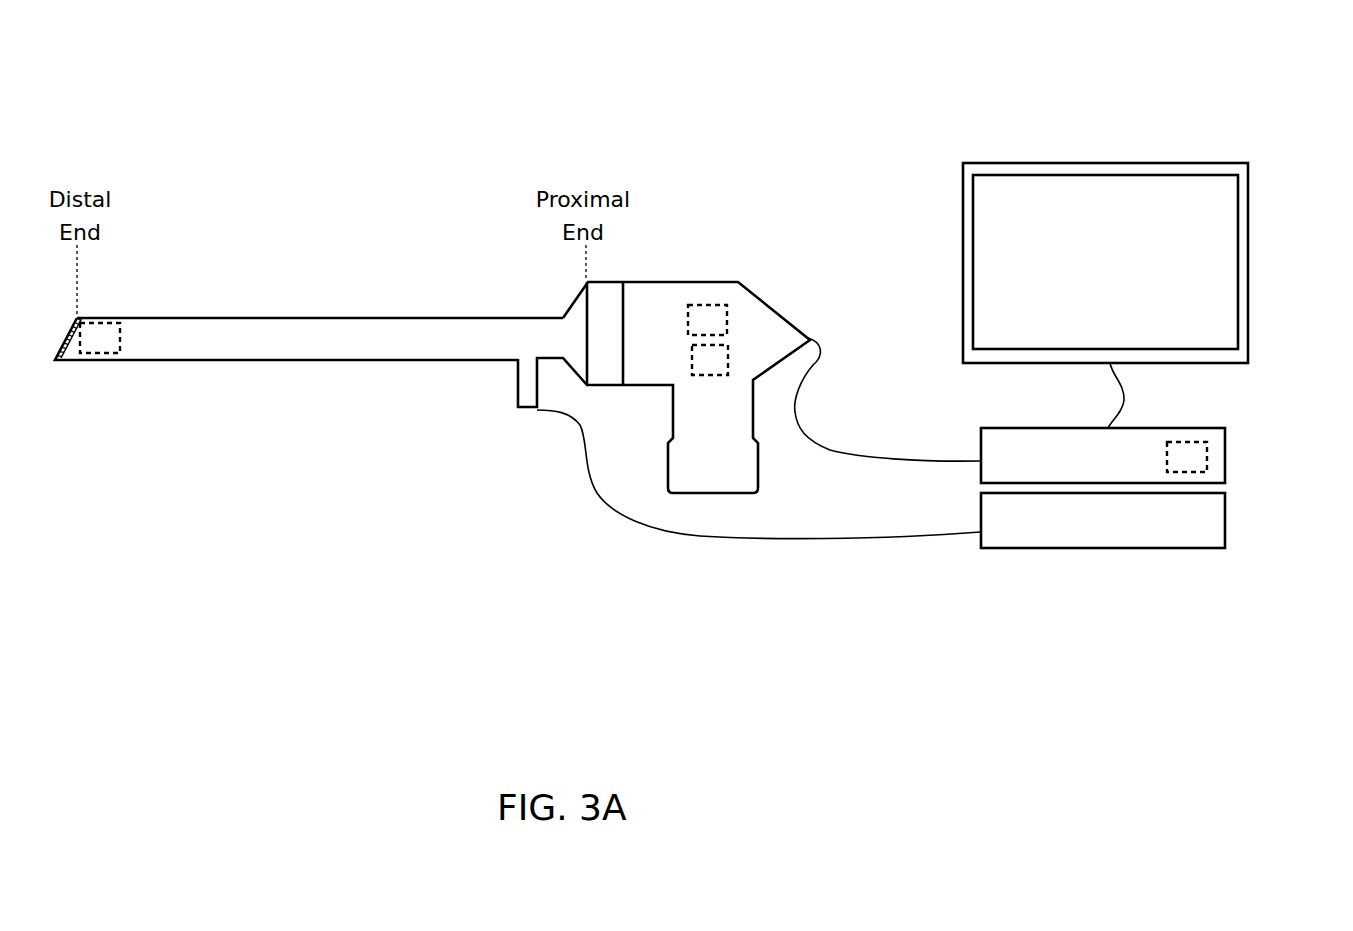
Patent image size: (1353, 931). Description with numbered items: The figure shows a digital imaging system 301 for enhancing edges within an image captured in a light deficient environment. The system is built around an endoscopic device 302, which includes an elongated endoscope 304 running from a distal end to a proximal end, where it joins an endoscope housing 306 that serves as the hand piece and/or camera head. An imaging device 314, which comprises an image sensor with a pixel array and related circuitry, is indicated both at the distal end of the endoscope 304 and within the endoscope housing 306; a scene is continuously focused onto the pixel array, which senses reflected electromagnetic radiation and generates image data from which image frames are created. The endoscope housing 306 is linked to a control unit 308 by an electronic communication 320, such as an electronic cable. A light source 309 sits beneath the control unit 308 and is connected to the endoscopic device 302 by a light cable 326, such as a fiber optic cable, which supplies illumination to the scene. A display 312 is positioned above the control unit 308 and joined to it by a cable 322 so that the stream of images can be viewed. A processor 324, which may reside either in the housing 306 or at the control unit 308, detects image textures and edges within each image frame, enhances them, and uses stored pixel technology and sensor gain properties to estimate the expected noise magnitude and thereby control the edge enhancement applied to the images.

The digital imaging system 301 is at (97, 138).
The endoscopic device 302 is at (305, 338).
The endoscope 304 is at (247, 318).
The endoscope housing 306 is at (758, 293).
The control unit 308 is at (1103, 455).
The light source 309 is at (1103, 520).
The display 312 is at (1105, 263).
The imaging device 314 is at (98, 323).
The electronic communication 320 is at (803, 427).
The display cable 322 is at (1122, 405).
The processor 324 is at (710, 375).
The light cable 326 is at (715, 533).